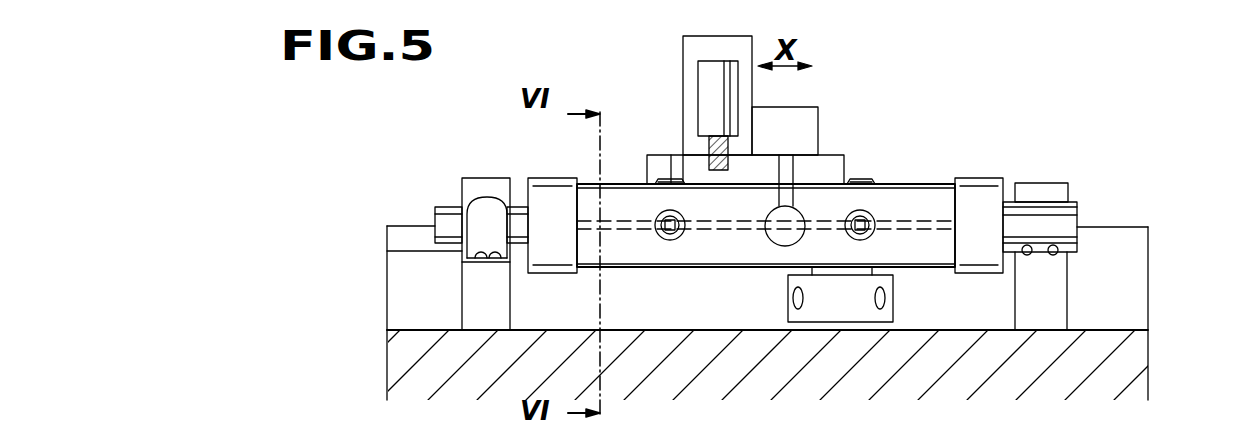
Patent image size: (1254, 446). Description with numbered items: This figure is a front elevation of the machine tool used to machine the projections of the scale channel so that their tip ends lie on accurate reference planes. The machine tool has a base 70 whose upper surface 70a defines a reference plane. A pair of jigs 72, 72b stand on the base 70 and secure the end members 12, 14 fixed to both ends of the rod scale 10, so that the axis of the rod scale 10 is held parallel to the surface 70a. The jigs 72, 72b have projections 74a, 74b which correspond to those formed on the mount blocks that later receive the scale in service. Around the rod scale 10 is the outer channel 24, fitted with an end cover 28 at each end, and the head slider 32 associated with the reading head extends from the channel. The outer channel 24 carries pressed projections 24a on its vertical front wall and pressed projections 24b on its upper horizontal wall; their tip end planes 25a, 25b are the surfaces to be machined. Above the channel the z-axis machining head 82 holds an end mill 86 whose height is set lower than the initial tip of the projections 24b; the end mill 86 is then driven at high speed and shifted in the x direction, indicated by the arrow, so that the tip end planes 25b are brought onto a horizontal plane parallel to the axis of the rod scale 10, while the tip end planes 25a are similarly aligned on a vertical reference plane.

The scale 10 is at (740, 228).
The end member 12 is at (447, 222).
The end member 14 is at (1065, 212).
The outer channel 24 is at (942, 185).
The pressed projections 24a is at (667, 240).
The pressed projections 24b is at (655, 182).
The tip end planes 25a is at (679, 238).
The tip end planes 25b is at (668, 178).
The end cover 28 is at (553, 190).
The head slider 32 is at (896, 292).
The base 70 is at (395, 383).
The surface 70a is at (412, 330).
The jig 72 is at (473, 300).
The jig 72b is at (1057, 312).
The projection 74a is at (492, 260).
The projection 74b is at (1040, 252).
The z-axis machining head 82 is at (700, 80).
The end mill 86 is at (728, 168).